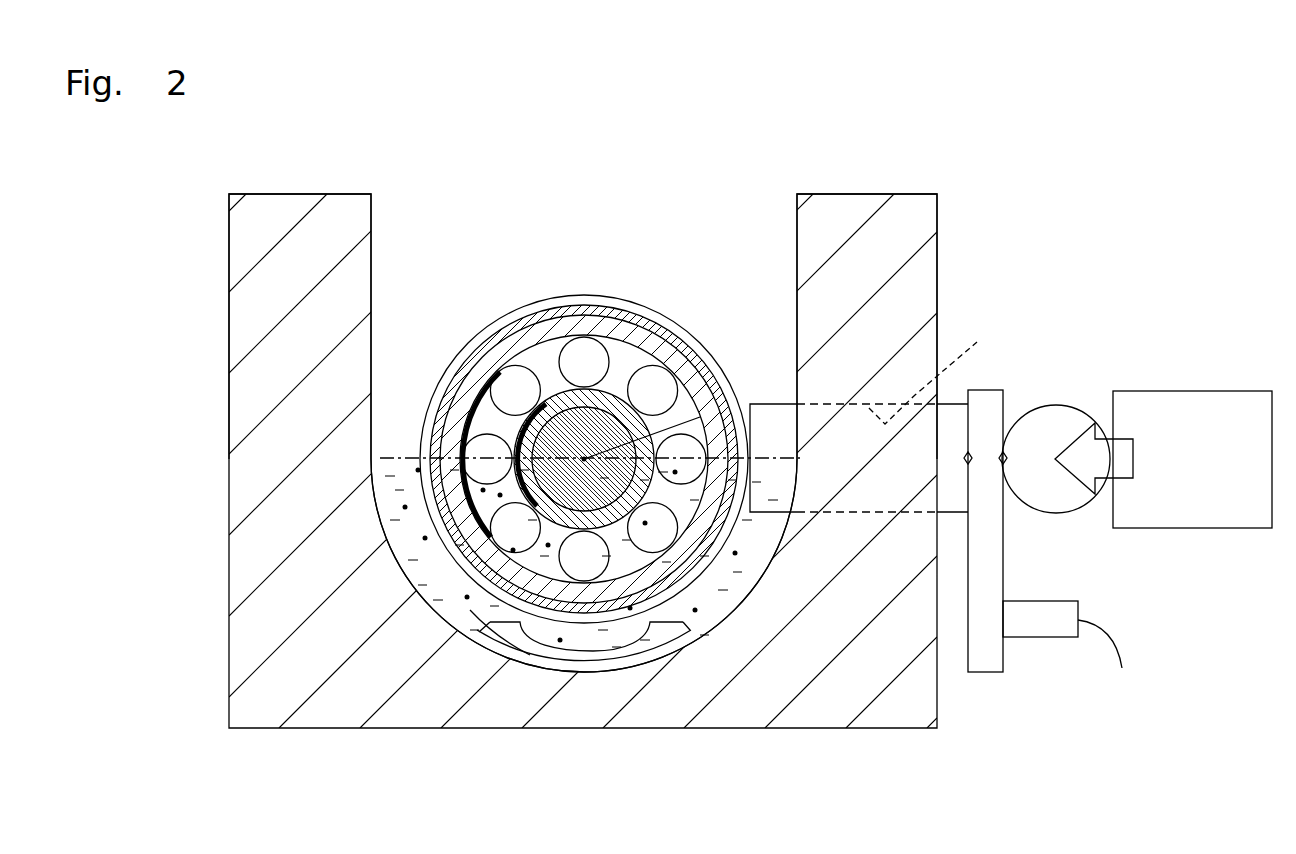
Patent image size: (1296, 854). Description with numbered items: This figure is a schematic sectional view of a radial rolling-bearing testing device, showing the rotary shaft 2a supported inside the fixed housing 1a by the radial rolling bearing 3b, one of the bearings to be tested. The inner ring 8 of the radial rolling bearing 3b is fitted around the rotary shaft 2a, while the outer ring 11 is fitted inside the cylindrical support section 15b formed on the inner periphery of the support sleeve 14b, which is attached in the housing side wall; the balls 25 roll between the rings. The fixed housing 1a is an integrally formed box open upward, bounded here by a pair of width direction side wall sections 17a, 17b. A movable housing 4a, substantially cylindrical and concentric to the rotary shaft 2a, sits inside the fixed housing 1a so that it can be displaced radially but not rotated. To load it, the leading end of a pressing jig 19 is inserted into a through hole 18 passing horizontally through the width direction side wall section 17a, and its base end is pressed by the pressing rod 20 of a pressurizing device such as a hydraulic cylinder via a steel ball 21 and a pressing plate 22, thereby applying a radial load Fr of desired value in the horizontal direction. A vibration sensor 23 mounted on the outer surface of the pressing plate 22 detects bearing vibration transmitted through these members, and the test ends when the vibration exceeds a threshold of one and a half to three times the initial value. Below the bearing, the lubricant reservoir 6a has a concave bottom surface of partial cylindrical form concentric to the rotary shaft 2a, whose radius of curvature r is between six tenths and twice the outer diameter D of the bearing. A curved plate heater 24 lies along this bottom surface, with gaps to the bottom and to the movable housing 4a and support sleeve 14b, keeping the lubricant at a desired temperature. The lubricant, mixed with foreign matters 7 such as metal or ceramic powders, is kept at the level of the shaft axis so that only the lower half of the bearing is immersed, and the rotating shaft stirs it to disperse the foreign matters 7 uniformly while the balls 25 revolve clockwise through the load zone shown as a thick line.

The fixed housing 1a is at (937, 193).
The width direction side wall section 17a is at (852, 213).
The width direction side wall section 17b is at (297, 218).
The lubricant reservoir 6a is at (442, 572).
The radius of curvature r is at (482, 620).
The heater 24 is at (592, 656).
The foreign matters 7 is at (425, 539).
The movable housing 4a is at (560, 300).
The support sleeve 14b is at (592, 306).
The outer ring 11 is at (647, 348).
The inner ring 8 is at (505, 372).
The balls 25 is at (654, 392).
The support section 15b is at (447, 445).
The radial rolling bearing 3b is at (468, 370).
The rotary shaft 2a is at (690, 420).
The outer diameter D is at (701, 418).
The through hole 18 is at (872, 423).
The pressing jig 19 is at (970, 396).
The pressing plate 22 is at (987, 668).
The steel ball 21 is at (1052, 420).
The pressing rod 20 is at (1220, 512).
The radial load Fr is at (1120, 433).
The vibration sensor 23 is at (1060, 632).